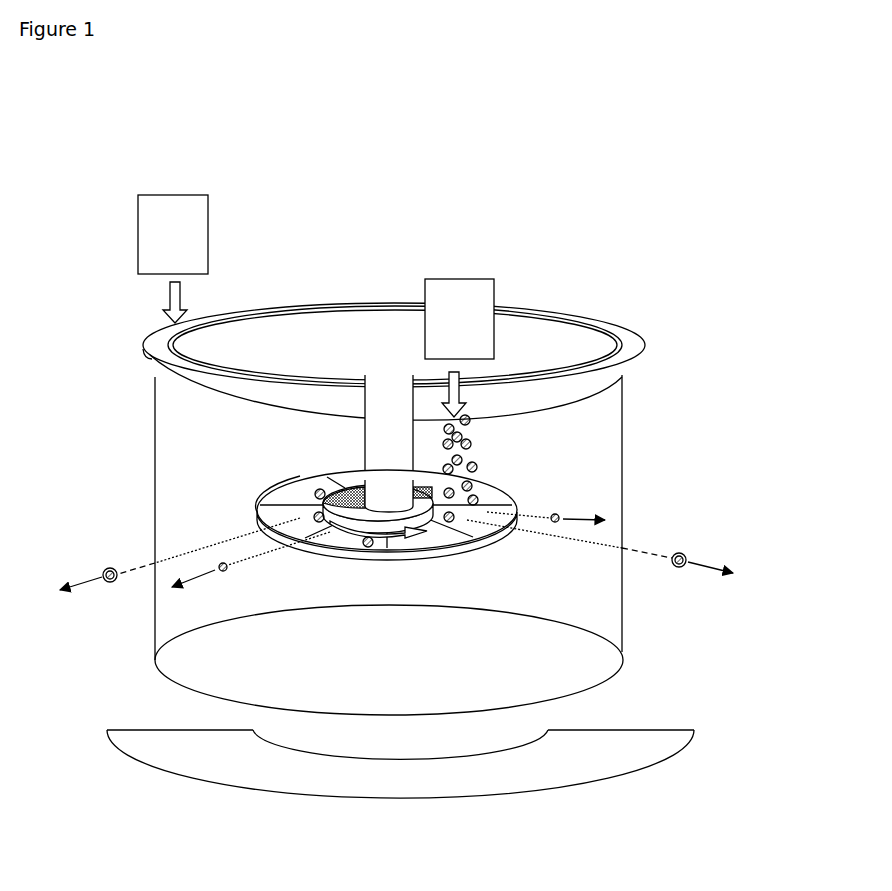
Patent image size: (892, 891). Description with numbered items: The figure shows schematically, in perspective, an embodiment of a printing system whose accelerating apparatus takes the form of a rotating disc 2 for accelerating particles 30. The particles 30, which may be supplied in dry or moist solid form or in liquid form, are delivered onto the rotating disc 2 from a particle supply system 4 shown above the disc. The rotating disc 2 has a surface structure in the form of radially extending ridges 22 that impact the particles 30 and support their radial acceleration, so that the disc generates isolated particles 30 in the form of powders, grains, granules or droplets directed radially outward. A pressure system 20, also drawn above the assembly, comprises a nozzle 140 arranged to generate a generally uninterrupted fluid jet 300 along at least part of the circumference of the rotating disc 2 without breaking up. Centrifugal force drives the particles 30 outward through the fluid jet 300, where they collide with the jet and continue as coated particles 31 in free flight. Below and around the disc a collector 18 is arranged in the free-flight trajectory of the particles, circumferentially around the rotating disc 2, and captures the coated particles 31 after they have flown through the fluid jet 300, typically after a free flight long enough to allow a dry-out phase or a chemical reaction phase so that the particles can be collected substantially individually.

The pressure system 20 is at (229, 216).
The particle supply system 4 is at (503, 327).
The nozzle 140 is at (412, 358).
The fluid jet 300 is at (436, 536).
The rotating disc 2 is at (457, 467).
The particles 30 is at (396, 501).
The radially extending ridges 22 is at (191, 481).
The coated particles 31 is at (679, 568).
The collector 18 is at (416, 730).